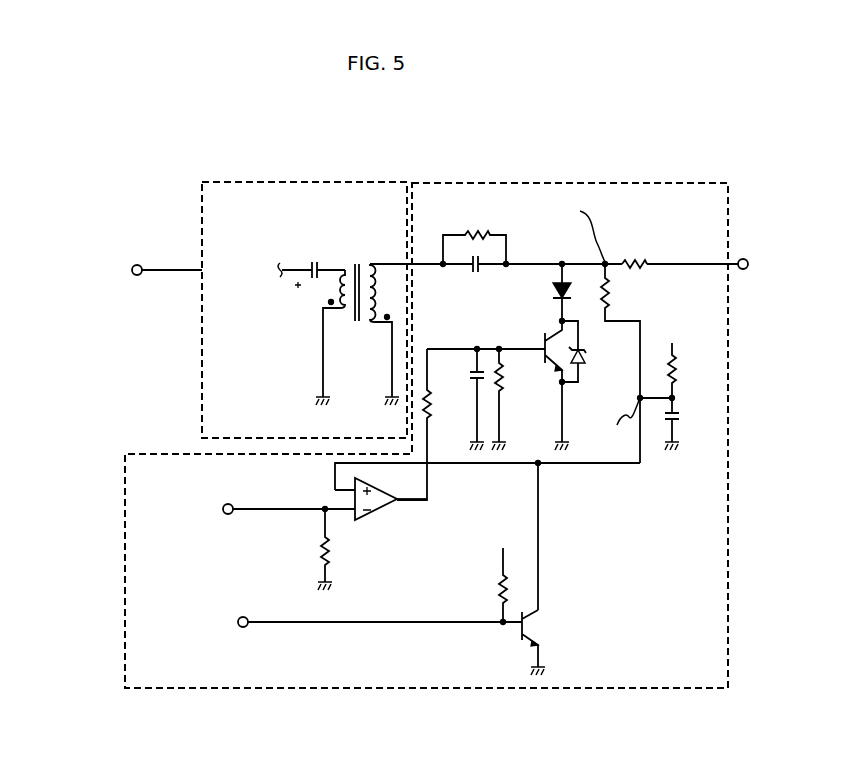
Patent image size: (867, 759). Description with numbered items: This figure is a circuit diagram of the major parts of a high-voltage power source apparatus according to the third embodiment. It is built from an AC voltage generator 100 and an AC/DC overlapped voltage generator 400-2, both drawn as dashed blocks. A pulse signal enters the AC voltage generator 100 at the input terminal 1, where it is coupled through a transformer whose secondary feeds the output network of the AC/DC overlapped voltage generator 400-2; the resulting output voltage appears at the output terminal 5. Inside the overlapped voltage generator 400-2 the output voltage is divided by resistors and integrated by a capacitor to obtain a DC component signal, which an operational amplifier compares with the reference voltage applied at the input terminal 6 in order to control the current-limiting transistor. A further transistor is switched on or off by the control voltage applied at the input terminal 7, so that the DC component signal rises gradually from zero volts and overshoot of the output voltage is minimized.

The input terminal 1 is at (137, 261).
The output terminal 5 is at (743, 259).
The input terminal 6 is at (229, 504).
The input terminal 7 is at (243, 617).
The AC voltage generator 100 is at (272, 182).
The AC/DC overlapped voltage generator 400-2 is at (580, 183).